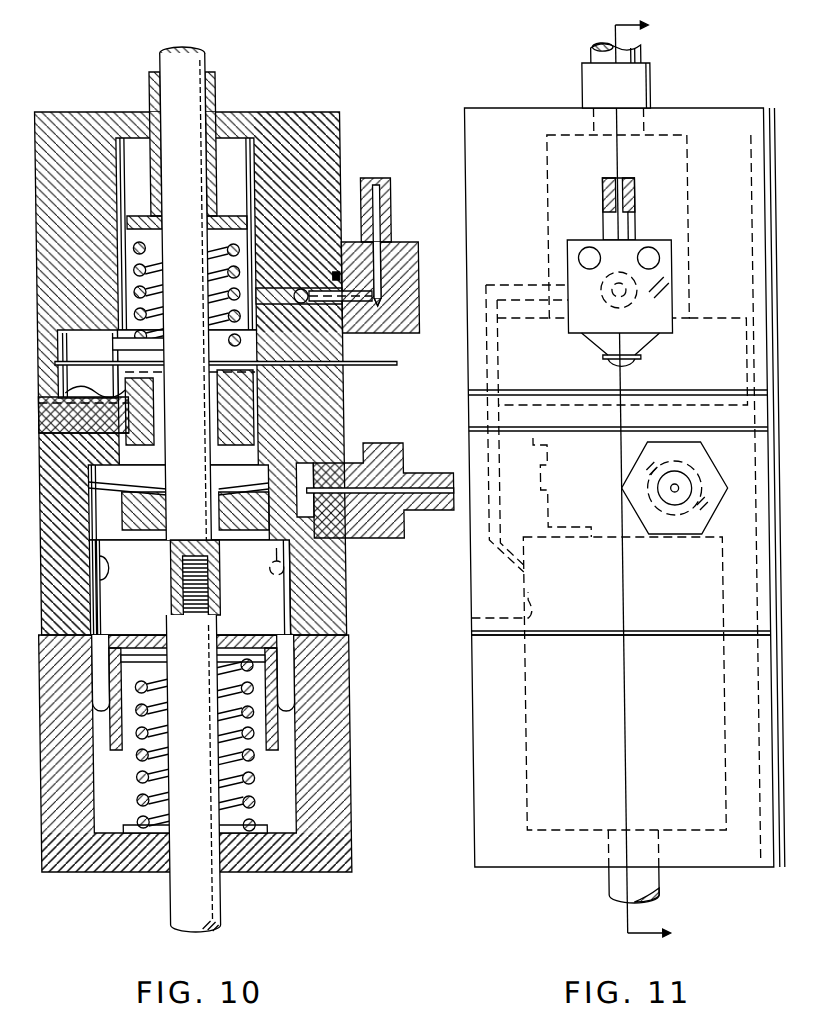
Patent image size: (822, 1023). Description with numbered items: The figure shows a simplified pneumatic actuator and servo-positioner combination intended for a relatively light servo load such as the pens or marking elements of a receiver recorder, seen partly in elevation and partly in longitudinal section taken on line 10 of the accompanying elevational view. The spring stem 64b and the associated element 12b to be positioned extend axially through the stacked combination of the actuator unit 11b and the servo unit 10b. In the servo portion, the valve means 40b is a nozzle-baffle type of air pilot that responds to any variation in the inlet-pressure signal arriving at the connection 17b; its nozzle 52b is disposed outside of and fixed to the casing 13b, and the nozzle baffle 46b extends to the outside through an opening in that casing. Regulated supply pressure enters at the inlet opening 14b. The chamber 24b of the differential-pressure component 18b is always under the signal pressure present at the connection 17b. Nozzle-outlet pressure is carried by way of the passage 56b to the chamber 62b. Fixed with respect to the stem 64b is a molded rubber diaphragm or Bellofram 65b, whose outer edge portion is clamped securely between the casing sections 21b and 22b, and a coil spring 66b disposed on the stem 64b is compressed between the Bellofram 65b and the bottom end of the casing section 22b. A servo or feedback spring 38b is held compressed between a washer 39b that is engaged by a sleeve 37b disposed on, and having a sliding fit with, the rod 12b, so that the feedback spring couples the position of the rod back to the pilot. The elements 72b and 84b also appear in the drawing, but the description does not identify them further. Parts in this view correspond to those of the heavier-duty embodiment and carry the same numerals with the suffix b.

In FIG. 11, the section line 10 is at (619, 478).
In FIG. 10, the servo unit 10b is at (228, 341).
In FIG. 11, the servo unit 10b is at (458, 130).
In FIG. 10, the actuator unit 11b is at (228, 773).
In FIG. 11, the actuator unit 11b is at (460, 762).
In FIG. 10, the element to be positioned 12b is at (193, 92).
In FIG. 11, the element to be positioned 12b is at (638, 46).
In FIG. 10, the casing 13b is at (328, 140).
In FIG. 10, the inlet opening 14b is at (376, 188).
In FIG. 11, the inlet opening 14b is at (618, 185).
In FIG. 10, the connection 17b is at (418, 470).
In FIG. 11, the connection 17b is at (672, 486).
In FIG. 10, the differential-pressure component 18b is at (56, 130).
In FIG. 10, the casing section 21b is at (42, 522).
In FIG. 10, the casing section 22b is at (70, 872).
In FIG. 10, the chamber 24b is at (95, 400).
In FIG. 10, the sleeve 37b is at (148, 96).
In FIG. 11, the sleeve 37b is at (580, 85).
In FIG. 10, the servo or feedback spring 38b is at (148, 249).
In FIG. 10, the washer 39b is at (238, 228).
In FIG. 10, the valve means 40b is at (360, 372).
In FIG. 10, the nozzle baffle 46b is at (390, 366).
In FIG. 11, the nozzle baffle 46b is at (636, 362).
In FIG. 10, the nozzle 52b is at (408, 258).
In FIG. 11, the nozzle 52b is at (670, 258).
In FIG. 10, the passage 56b is at (296, 288).
In FIG. 11, the passage 56b is at (588, 290).
In FIG. 10, the chamber 62b is at (88, 562).
In FIG. 11, the chamber 62b is at (465, 618).
In FIG. 10, the spring stem 64b is at (210, 893).
In FIG. 11, the spring stem 64b is at (648, 890).
In FIG. 10, the Bellofram 65b is at (92, 718).
In FIG. 10, the coil spring 66b is at (242, 758).
In FIG. 10, the lever 72b is at (55, 379).
In FIG. 10, the passage 84b is at (108, 440).